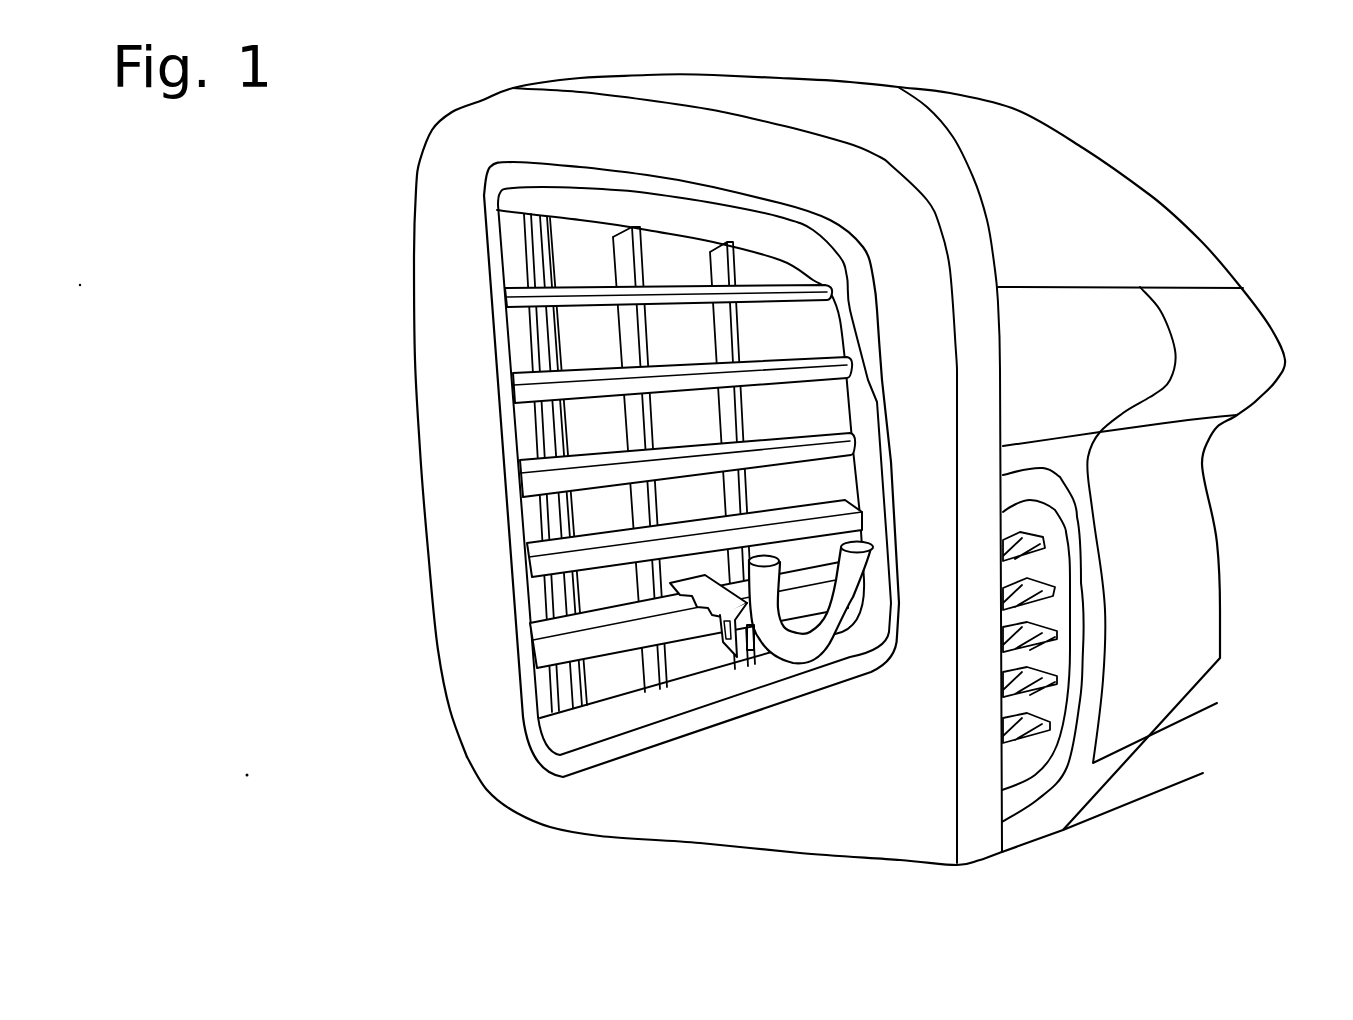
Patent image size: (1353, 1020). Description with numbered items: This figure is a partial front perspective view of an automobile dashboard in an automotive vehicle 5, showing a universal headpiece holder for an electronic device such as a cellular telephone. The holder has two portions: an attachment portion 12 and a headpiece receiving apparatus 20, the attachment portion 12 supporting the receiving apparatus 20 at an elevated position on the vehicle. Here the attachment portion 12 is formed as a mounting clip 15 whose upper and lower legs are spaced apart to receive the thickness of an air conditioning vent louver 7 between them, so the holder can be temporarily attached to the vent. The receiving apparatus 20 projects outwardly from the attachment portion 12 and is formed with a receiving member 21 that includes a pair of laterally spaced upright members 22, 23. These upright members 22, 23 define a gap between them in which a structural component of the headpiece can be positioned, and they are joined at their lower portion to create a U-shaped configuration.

The automotive vehicle 5 is at (447, 190).
The air conditioning vent louver 7 is at (545, 642).
The attachment portion 12 is at (720, 640).
The mounting clip 15 is at (737, 610).
The headpiece receiving apparatus 20 is at (903, 538).
The receiving member 21 is at (813, 640).
The upright member 22 is at (765, 597).
The upright member 23 is at (851, 584).